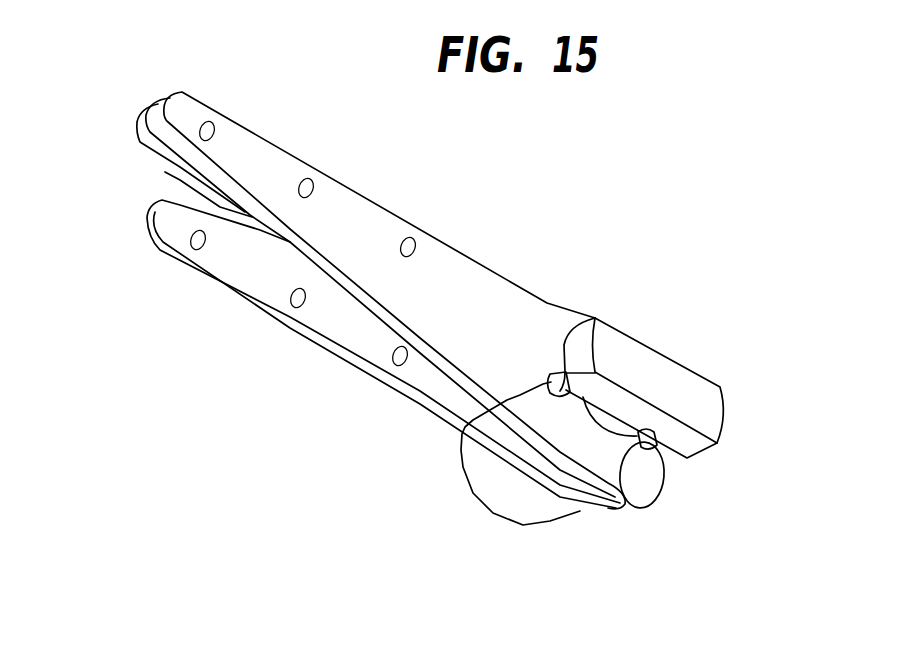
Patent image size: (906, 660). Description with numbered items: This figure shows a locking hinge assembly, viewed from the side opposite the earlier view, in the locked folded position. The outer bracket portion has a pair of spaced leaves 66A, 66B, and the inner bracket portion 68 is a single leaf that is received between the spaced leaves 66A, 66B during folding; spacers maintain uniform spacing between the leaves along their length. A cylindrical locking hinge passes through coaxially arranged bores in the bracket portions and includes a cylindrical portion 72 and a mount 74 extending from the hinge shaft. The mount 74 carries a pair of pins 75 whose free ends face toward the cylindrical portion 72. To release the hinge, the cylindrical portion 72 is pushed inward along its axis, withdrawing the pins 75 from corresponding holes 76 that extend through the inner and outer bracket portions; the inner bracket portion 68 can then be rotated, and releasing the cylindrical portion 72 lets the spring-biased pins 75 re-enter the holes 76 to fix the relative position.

The spaced leaf 66A is at (158, 162).
The spaced leaf 66B is at (247, 156).
The inner bracket portion 68 is at (252, 277).
The cylindrical portion 72 is at (505, 478).
The mount 74 is at (667, 377).
The pins 75 is at (553, 374).
The holes 76 is at (472, 428).